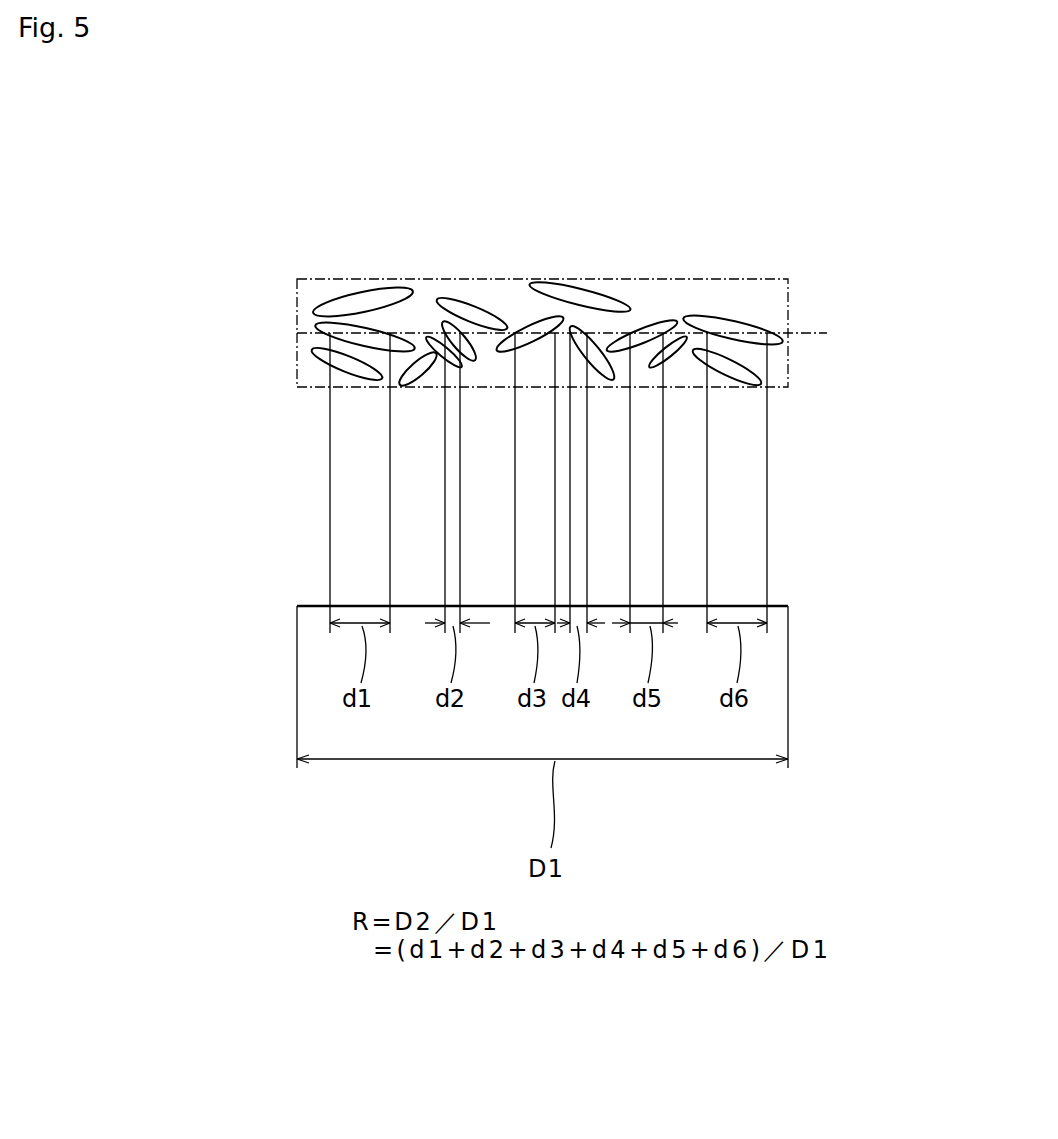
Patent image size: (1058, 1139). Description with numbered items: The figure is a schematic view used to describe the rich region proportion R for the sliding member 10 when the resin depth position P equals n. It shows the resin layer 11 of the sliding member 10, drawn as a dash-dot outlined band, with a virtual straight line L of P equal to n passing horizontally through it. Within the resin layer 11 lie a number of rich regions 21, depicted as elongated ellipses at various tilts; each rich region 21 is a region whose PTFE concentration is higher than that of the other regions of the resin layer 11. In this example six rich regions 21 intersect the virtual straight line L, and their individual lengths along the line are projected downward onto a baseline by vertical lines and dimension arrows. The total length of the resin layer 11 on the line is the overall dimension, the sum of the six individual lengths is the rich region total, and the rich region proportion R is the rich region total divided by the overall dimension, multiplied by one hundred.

The sliding member 10 is at (734, 268).
The resin layer 11 is at (286, 311).
The rich region 21 is at (383, 289).